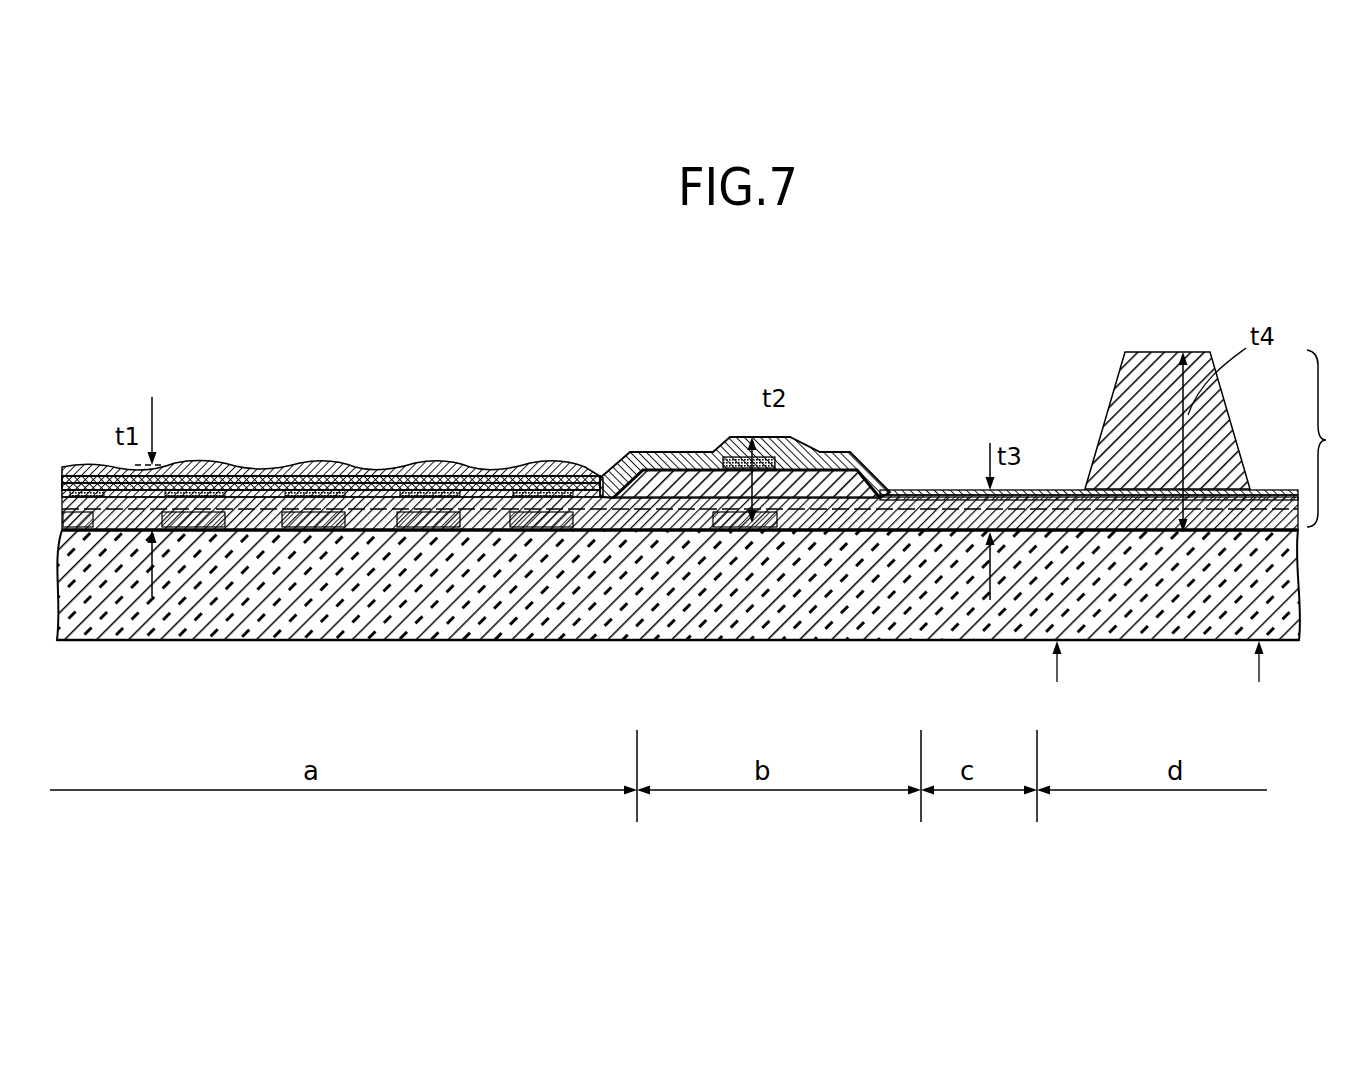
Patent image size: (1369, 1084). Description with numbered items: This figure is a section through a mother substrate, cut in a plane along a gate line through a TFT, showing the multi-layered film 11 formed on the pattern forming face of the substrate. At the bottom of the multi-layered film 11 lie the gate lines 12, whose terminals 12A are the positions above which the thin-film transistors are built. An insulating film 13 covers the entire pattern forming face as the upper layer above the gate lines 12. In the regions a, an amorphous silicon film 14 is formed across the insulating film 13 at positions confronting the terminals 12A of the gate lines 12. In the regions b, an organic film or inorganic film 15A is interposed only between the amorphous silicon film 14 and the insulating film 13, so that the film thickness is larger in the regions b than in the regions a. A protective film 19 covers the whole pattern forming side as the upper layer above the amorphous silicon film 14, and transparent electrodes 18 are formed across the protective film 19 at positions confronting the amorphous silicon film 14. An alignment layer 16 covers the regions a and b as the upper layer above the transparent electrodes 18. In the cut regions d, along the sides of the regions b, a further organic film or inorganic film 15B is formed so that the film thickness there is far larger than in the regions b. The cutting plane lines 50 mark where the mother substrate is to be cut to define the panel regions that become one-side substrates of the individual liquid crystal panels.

The multi-layered film 11 is at (1338, 438).
The gate lines 12 is at (873, 530).
The terminals of the gate lines 12A is at (70, 530).
The insulating film 13 is at (945, 493).
The amorphous silicon film 14 is at (180, 483).
The organic film (or inorganic film) 15A is at (663, 455).
The organic film (or inorganic film) 15B is at (1140, 350).
The alignment layer 16 is at (733, 440).
The transparent electrodes 18 is at (207, 472).
The protective film 19 is at (917, 490).
The cutting plane lines 50 is at (1154, 679).